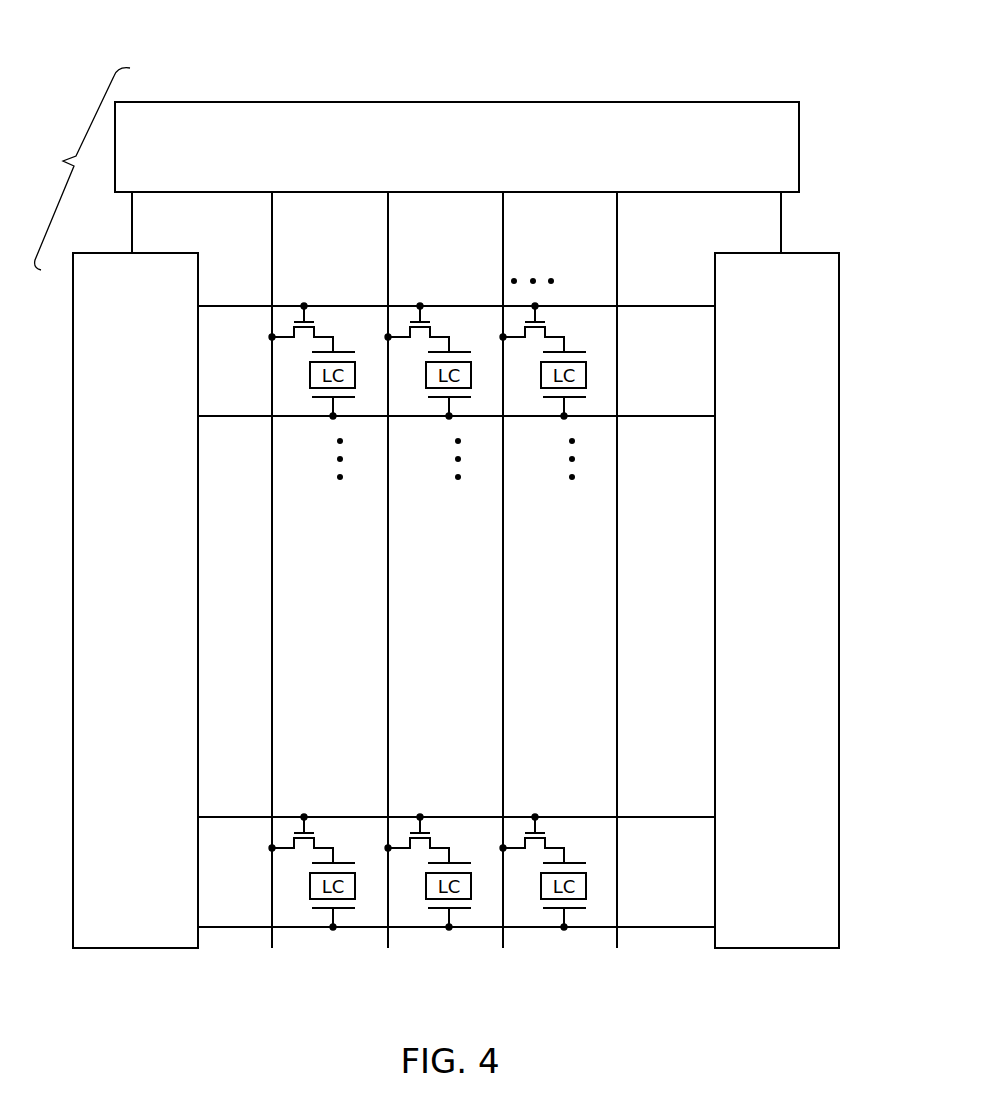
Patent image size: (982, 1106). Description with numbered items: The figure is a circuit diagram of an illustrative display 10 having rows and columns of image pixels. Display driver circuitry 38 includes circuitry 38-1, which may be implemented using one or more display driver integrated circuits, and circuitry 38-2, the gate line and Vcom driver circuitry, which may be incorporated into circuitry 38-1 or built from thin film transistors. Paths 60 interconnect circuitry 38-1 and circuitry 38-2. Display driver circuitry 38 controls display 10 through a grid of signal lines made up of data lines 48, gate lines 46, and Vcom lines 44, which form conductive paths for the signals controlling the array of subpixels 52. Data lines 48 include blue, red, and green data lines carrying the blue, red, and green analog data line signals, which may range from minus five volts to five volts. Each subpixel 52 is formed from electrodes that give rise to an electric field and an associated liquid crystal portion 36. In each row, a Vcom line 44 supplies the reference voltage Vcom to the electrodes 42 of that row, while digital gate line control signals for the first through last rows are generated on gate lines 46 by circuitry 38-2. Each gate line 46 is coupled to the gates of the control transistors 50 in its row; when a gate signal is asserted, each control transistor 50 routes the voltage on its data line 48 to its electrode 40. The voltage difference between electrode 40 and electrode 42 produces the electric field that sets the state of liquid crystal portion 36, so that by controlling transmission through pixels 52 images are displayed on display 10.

The display 10 is at (540, 51).
The display driver circuitry 38 is at (82, 169).
The driver circuitry 38-1 is at (628, 103).
The gate line and Vcom driver circuitry 38-2 is at (103, 252).
The paths 60 is at (134, 216).
The data lines 48 is at (275, 285).
The gate lines 46 is at (660, 305).
The Vcom lines 44 is at (658, 415).
The subpixels 52 is at (299, 396).
The control transistors 50 is at (299, 342).
The electrode 40 is at (338, 350).
The liquid crystal portion 36 is at (355, 368).
The electrode 42 is at (346, 398).